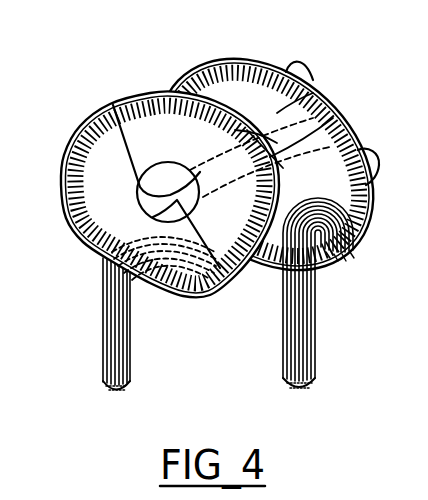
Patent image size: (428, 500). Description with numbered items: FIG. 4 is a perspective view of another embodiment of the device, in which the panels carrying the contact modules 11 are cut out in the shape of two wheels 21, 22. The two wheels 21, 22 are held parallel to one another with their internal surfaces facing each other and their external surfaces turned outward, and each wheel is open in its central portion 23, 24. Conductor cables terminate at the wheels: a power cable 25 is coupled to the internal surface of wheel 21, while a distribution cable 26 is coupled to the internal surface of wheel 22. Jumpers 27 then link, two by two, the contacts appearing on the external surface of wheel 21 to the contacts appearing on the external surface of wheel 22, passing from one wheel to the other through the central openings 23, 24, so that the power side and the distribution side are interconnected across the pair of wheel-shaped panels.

The contact modules 11 is at (85, 112).
The panel cut out in the shape of a wheel 21 is at (107, 164).
The panel cut out in the shape of a wheel 22 is at (310, 88).
The central portion 23 is at (73, 222).
The central portion 24 is at (333, 118).
The power cable 25 is at (120, 350).
The distribution cable 26 is at (286, 327).
The jumpers 27 is at (128, 137).